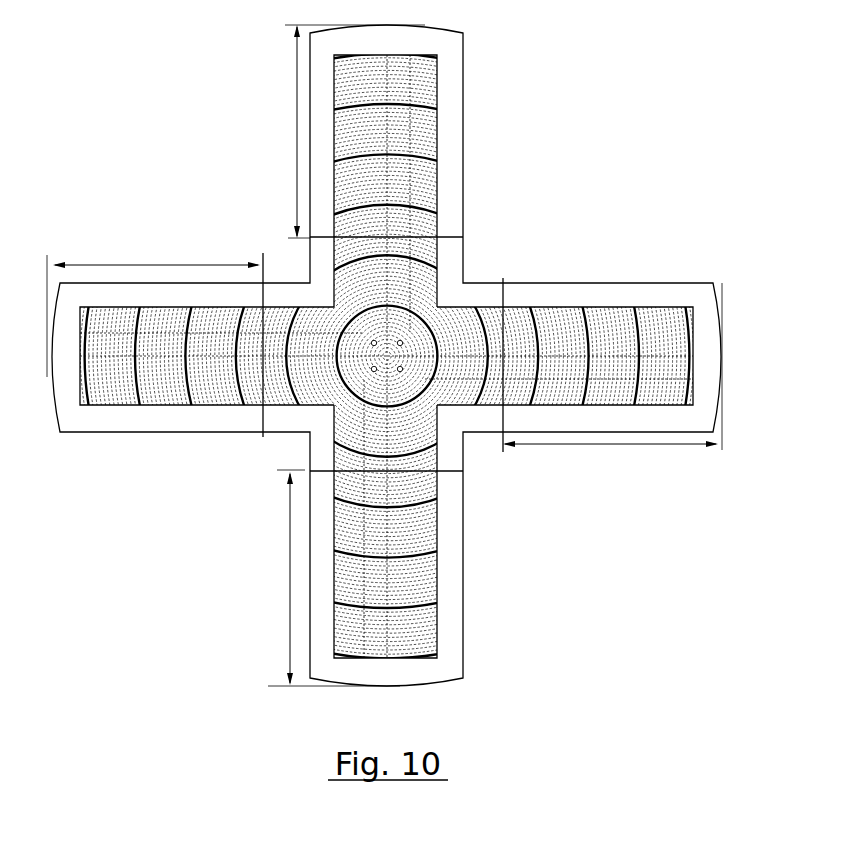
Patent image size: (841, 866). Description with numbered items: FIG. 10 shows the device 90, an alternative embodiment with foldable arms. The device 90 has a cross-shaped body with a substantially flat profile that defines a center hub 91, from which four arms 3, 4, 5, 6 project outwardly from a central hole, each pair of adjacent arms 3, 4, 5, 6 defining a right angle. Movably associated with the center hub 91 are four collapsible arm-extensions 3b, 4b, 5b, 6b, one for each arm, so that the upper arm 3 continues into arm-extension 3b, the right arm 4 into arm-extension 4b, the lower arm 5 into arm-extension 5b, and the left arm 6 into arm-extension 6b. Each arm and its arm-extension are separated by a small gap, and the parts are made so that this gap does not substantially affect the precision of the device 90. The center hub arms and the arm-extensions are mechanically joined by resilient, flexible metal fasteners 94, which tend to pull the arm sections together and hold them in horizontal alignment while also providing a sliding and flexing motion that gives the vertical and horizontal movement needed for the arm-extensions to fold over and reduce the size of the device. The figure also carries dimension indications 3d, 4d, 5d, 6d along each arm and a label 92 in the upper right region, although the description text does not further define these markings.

The device 90 is at (167, 104).
The arm 3 is at (463, 257).
The arm-extension 3b is at (421, 72).
The first arm length 3d is at (296, 135).
The arm 4 is at (490, 279).
The arm-extension 4b is at (667, 307).
The second arm length 4d is at (627, 445).
The arm 5 is at (463, 452).
The arm-extension 5b is at (431, 635).
The third arm length 5d is at (288, 592).
The arm 6 is at (280, 433).
The arm-extension 6b is at (103, 377).
The fourth arm length 6d is at (165, 263).
The center hub 91 is at (487, 293).
The central region 92 is at (579, 102).
The fastener 94 is at (278, 283).